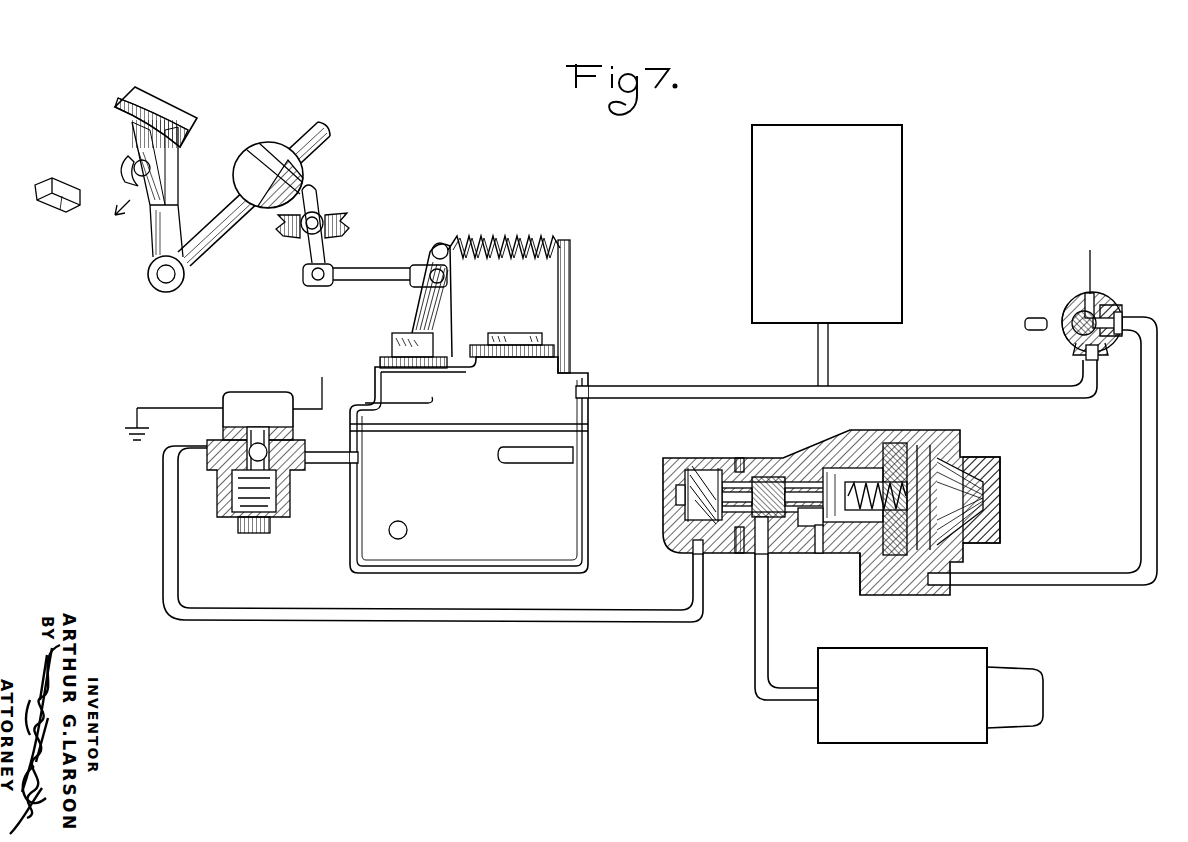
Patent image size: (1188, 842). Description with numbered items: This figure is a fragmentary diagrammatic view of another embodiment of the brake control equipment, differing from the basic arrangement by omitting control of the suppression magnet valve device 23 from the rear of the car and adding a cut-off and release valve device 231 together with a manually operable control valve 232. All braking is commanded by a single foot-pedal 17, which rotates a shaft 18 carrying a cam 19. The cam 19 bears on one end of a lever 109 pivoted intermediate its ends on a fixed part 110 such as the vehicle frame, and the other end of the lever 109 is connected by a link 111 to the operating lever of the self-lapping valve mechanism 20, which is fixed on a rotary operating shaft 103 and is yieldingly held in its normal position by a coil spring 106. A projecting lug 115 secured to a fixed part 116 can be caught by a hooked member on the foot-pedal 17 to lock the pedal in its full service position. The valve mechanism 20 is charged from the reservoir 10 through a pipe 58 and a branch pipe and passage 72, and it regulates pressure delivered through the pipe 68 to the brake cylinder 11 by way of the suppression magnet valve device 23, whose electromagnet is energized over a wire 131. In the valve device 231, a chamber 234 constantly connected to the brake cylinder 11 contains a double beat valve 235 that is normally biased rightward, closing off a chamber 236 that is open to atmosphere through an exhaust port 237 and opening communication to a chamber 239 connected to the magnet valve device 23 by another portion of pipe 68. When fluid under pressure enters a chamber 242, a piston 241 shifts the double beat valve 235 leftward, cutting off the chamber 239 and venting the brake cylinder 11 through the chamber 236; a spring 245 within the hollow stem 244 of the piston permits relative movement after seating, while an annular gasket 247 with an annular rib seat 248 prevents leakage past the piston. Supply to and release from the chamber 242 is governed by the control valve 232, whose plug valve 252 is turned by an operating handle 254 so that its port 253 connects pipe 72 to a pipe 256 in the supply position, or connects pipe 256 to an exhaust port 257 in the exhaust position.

The reservoir 10 is at (748, 252).
The brake cylinder 11 is at (955, 648).
The foot-pedal 17 is at (148, 256).
The shaft 18 is at (232, 208).
The cam 19 is at (252, 163).
The self-lapping valve mechanism 20 is at (340, 569).
The suppression magnet valve device 23 is at (245, 392).
The pipe 58 is at (818, 358).
The pipe 68 is at (322, 452).
The branch pipe and passage 72 is at (655, 392).
The rotary operating shaft 103 is at (389, 529).
The coil spring 106 is at (516, 250).
The lever 109 is at (326, 262).
The fixed part 110 is at (346, 226).
The link 111 is at (370, 283).
The projecting lug 115 is at (80, 196).
The fixed part 116 is at (55, 185).
The wire 131 is at (322, 396).
The cut-off and release valve device 231 is at (760, 455).
The manually operable control valve 232 is at (1105, 296).
The chamber 234 is at (755, 540).
The double beat valve 235 is at (792, 545).
The chamber 236 is at (825, 525).
The exhaust port 237 is at (812, 553).
The chamber 239 is at (703, 470).
The piston 241 is at (905, 430).
The chamber 242 is at (1000, 493).
The hollow stem 244 is at (850, 442).
The spring 245 is at (980, 485).
The annular gasket 247 is at (868, 592).
The annular rib seat 248 is at (913, 595).
The plug valve 252 is at (1068, 333).
The port 253 is at (1084, 311).
The operating handle 254 is at (1027, 318).
The pipe 256 is at (1068, 572).
The exhaust port 257 is at (1089, 294).